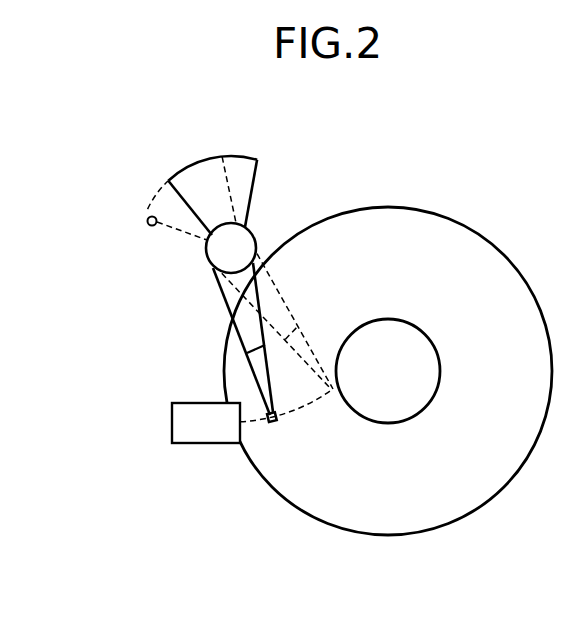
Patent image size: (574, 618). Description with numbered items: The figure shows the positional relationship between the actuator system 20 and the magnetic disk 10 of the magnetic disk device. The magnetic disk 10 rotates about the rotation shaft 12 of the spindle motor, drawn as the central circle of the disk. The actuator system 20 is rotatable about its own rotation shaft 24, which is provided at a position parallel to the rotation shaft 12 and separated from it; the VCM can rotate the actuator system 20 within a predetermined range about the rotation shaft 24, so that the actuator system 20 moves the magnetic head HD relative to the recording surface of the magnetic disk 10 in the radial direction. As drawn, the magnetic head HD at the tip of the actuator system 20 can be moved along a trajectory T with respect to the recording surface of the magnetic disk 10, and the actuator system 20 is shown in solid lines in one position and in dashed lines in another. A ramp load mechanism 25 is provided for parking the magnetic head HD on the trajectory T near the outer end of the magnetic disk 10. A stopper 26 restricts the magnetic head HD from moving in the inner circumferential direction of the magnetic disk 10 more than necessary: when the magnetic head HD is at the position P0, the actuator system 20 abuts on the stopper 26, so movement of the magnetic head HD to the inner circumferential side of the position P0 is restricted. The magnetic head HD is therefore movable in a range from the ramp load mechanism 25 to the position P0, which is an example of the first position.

The magnetic disk 10 is at (453, 221).
The rotation shaft 12 is at (387, 345).
The actuator system 20 is at (240, 157).
The rotation shaft 24 is at (218, 258).
The ramp load mechanism 25 is at (206, 443).
The stopper 26 is at (148, 226).
The magnetic head HD is at (273, 422).
The trajectory T is at (319, 407).
The position P0 is at (333, 390).